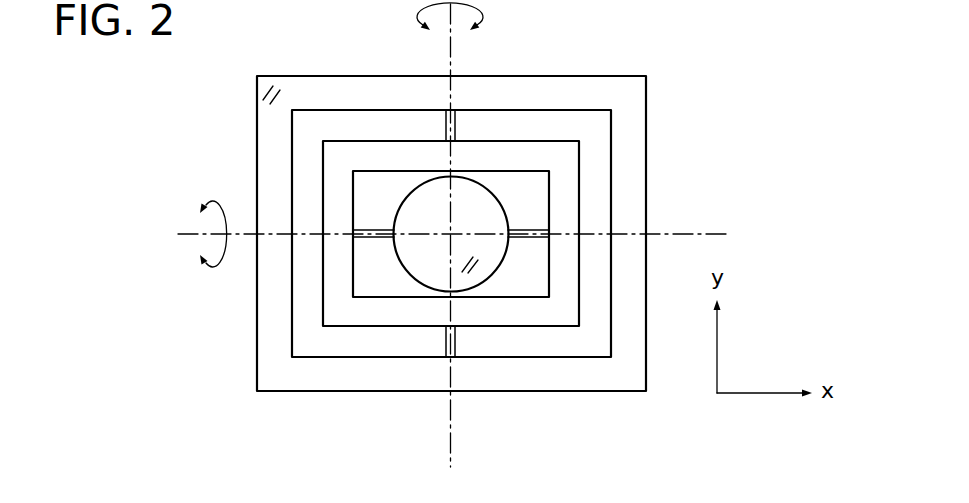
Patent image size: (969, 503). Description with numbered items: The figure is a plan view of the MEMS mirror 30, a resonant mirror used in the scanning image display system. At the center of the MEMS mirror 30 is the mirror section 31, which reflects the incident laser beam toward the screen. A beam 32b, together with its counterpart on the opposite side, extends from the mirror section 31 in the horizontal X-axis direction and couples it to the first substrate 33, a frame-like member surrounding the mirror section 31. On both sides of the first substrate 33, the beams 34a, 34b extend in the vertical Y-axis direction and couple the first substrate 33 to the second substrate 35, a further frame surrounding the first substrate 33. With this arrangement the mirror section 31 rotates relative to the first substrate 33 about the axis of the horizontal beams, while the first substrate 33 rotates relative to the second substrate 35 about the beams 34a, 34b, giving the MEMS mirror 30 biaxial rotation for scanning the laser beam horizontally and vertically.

The MEMS mirror 30 is at (700, 59).
The mirror section 31 is at (488, 255).
The beam 32b is at (372, 230).
The first substrate 33 is at (385, 312).
The beam 34a is at (445, 128).
The beam 34b is at (458, 345).
The second substrate 35 is at (547, 90).